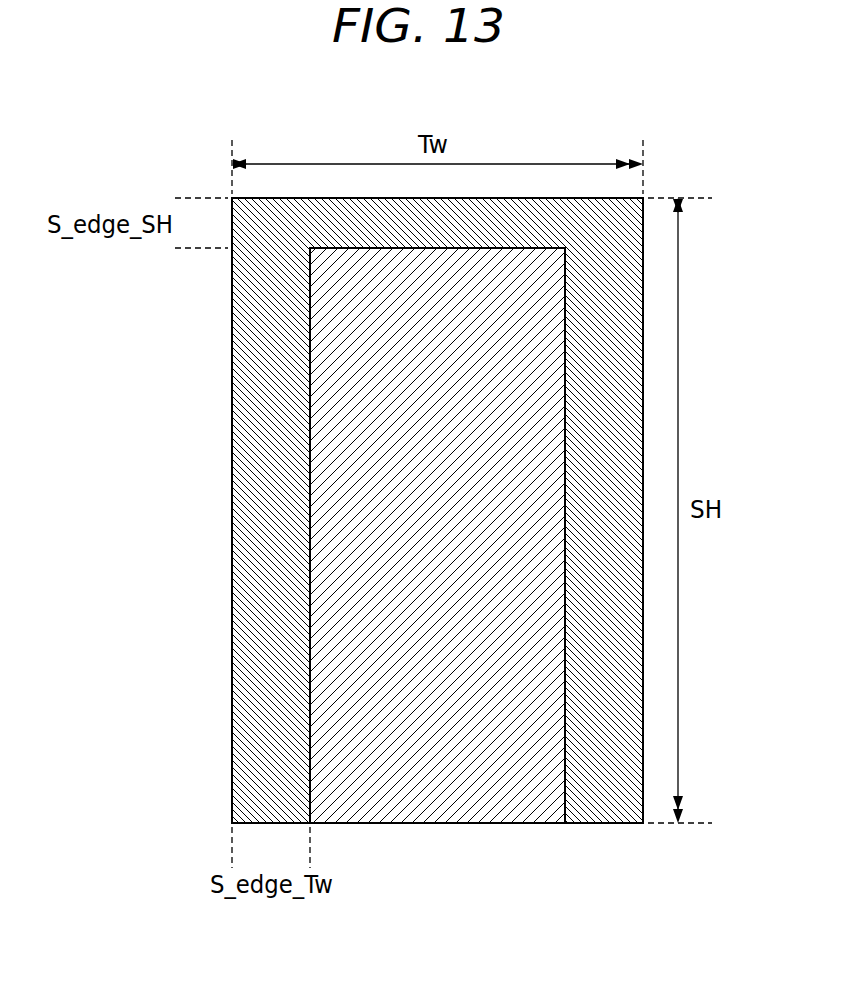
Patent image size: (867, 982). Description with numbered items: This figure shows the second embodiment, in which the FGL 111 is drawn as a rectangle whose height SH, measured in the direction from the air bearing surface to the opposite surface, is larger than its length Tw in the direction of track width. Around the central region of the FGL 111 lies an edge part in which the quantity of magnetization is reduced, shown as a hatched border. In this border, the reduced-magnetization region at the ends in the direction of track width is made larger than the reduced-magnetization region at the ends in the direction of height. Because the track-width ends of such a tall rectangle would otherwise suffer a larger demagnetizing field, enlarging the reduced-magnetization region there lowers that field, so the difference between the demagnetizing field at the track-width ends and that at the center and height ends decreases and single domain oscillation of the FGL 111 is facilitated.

The FGL 111 is at (607, 95).